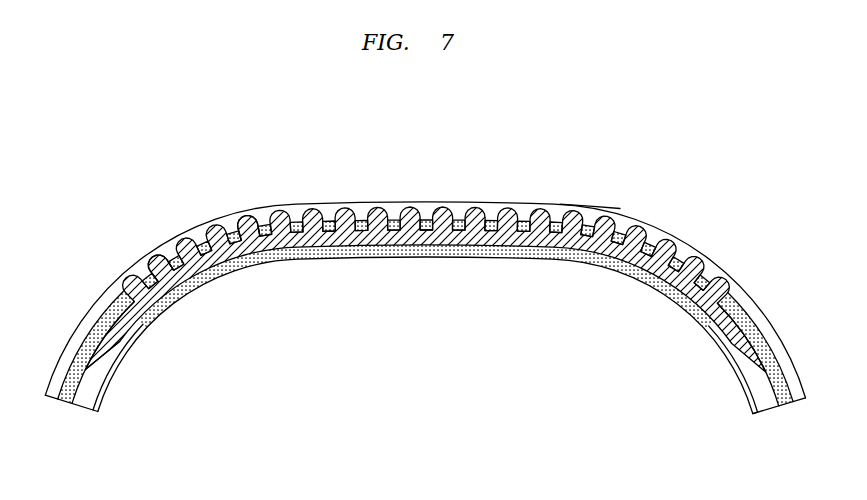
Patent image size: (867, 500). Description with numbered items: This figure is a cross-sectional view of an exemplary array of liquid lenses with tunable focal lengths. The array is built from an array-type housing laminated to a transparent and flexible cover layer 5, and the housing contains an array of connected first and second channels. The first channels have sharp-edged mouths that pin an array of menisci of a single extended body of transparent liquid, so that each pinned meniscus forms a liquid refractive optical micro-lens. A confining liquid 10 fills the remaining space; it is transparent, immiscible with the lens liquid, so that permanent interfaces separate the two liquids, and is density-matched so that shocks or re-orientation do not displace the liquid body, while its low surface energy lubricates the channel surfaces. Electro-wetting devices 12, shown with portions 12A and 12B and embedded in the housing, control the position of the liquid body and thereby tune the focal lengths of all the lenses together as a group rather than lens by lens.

The cover layer 5 is at (100, 292).
The confining liquid 10 is at (80, 331).
The electro-wetting devices 12 is at (111, 408).
The carcass inner ply 12A is at (747, 406).
The carcass outer ply 12B is at (724, 352).